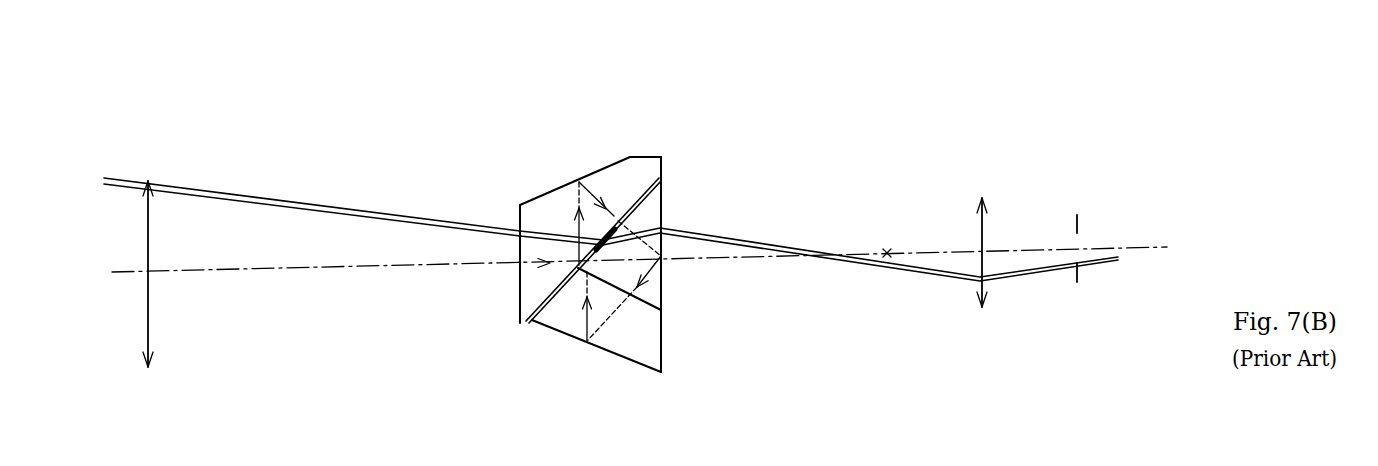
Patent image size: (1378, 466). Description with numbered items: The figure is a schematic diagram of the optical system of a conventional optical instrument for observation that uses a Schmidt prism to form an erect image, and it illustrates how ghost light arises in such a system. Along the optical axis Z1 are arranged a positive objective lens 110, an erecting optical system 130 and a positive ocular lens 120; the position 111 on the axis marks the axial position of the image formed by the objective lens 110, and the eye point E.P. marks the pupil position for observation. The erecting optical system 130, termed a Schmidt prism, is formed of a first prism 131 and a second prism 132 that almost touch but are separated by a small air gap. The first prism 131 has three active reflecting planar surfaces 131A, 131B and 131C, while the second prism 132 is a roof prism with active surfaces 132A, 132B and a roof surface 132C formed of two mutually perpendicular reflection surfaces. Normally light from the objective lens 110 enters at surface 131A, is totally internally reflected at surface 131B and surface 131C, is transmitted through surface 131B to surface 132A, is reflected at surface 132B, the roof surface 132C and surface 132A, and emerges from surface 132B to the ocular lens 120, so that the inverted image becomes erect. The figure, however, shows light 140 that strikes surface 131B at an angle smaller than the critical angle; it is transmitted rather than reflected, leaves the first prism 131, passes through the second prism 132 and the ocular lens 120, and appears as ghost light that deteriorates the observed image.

The positive objective lens 110 is at (147, 227).
The light 140 is at (321, 202).
The erecting optical system 130 is at (603, 90).
The first prism 131 is at (590, 222).
The surface 131A is at (520, 294).
The surface 131B is at (653, 176).
The surface 131C is at (553, 191).
The second prism 132 is at (602, 293).
The surface 132A is at (652, 204).
The surface 132B is at (665, 286).
The roof surface 132C is at (652, 341).
The axial position of image 111 is at (888, 250).
The positive ocular lens 120 is at (979, 230).
The pupil position for observation E.P. is at (1076, 228).
The optical axis Z1 is at (1141, 249).